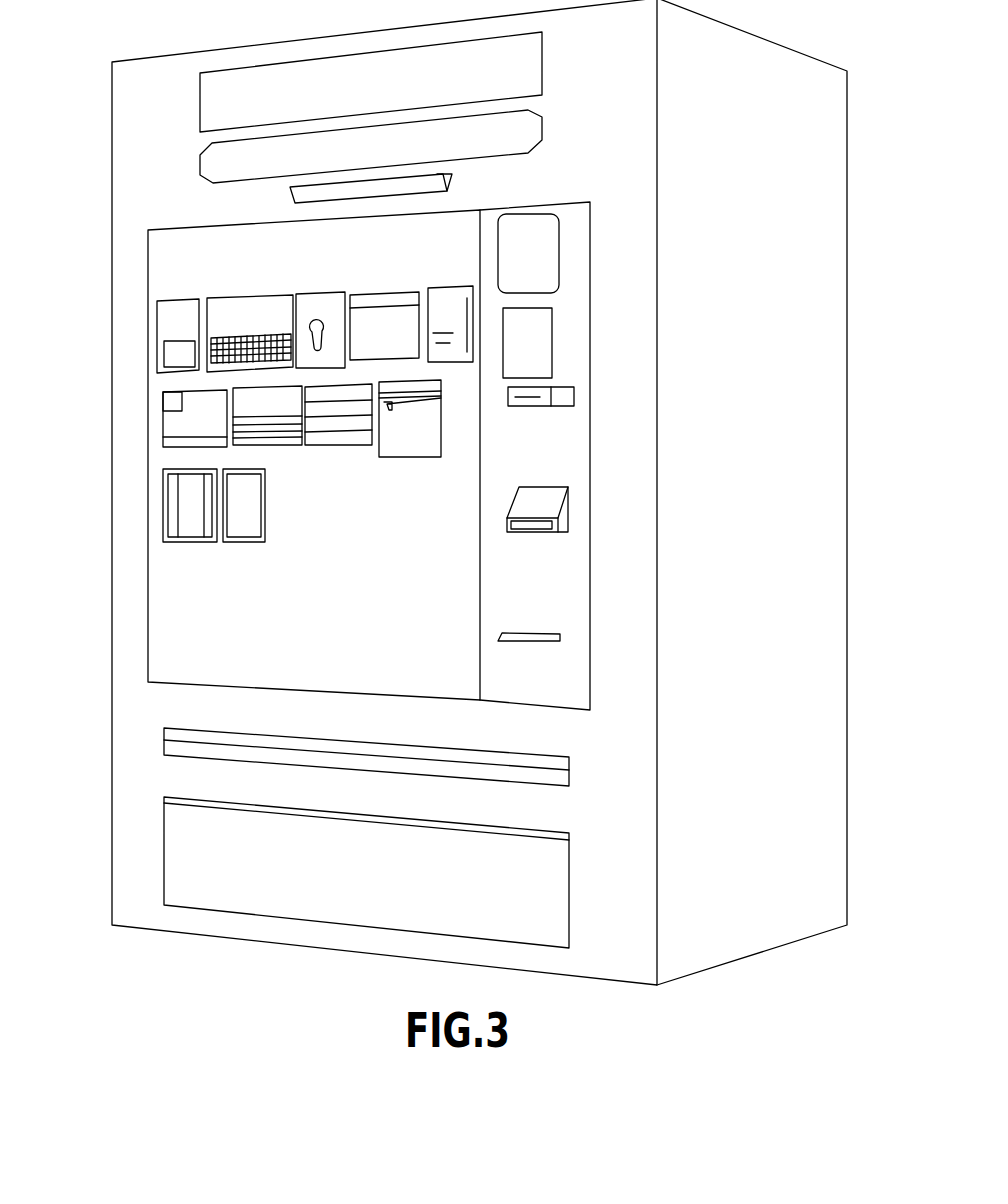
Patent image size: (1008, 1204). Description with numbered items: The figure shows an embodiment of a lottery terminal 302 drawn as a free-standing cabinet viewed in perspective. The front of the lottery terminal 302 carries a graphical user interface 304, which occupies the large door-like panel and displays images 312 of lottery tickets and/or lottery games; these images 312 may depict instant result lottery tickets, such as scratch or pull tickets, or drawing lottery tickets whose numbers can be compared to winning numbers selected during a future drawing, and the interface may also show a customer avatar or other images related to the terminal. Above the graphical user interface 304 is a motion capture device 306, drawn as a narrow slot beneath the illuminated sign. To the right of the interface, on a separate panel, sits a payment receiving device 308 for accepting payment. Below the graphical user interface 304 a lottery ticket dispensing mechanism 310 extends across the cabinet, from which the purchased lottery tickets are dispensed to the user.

The lottery terminal 302 is at (98, 478).
The graphical user interface 304 is at (265, 455).
The motion capture device 306 is at (290, 191).
The payment receiving device 308 is at (562, 508).
The lottery ticket dispensing mechanism 310 is at (569, 770).
The images 312 is at (174, 332).